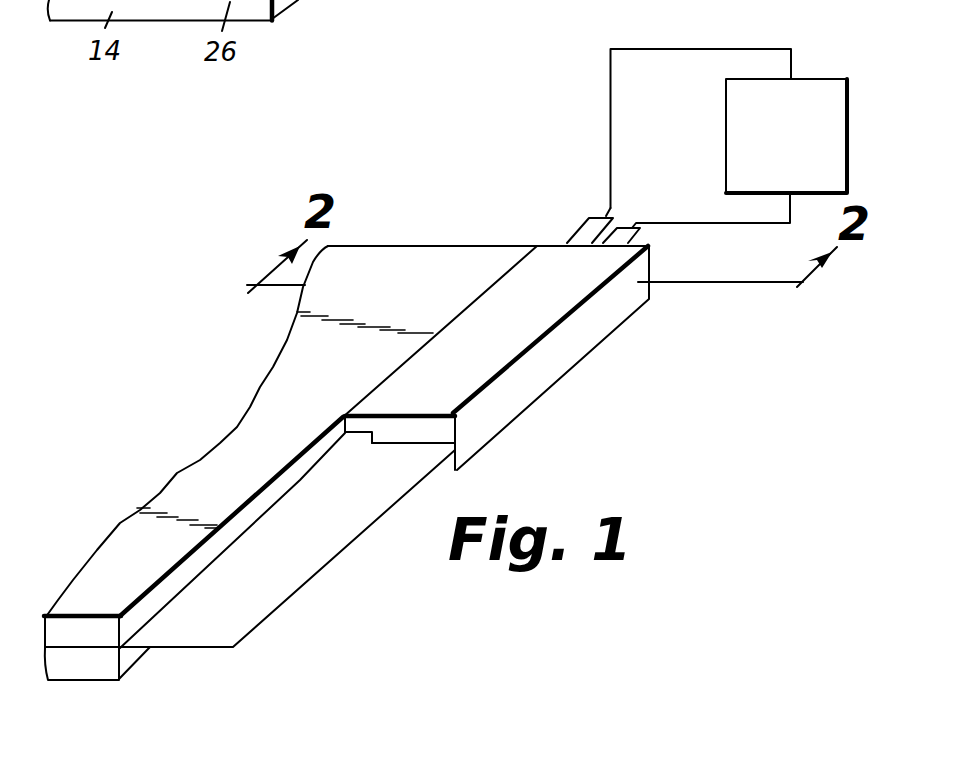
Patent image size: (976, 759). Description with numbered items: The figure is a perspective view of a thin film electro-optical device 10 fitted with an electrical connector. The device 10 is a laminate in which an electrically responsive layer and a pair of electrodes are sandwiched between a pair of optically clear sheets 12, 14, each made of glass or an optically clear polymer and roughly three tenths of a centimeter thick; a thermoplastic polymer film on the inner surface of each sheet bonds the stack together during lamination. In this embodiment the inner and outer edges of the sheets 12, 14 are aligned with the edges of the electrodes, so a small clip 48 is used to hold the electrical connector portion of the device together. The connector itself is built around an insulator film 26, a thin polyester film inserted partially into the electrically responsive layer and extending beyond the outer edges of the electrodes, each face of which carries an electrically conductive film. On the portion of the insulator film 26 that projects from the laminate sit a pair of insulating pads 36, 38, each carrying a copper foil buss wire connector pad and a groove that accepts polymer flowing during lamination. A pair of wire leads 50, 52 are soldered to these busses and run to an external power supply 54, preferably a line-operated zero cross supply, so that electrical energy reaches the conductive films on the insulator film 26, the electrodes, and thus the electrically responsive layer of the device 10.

The electro-optical device 10 is at (490, 178).
The optically clear sheet 12 is at (382, 255).
The optically clear sheet 14 is at (90, 670).
The insulator film 26 is at (332, 555).
The insulating pad 36 is at (413, 446).
The insulating pad 38 is at (447, 467).
The clip 48 is at (593, 335).
The wire lead 50 is at (733, 48).
The wire lead 52 is at (768, 223).
The power supply 54 is at (828, 85).